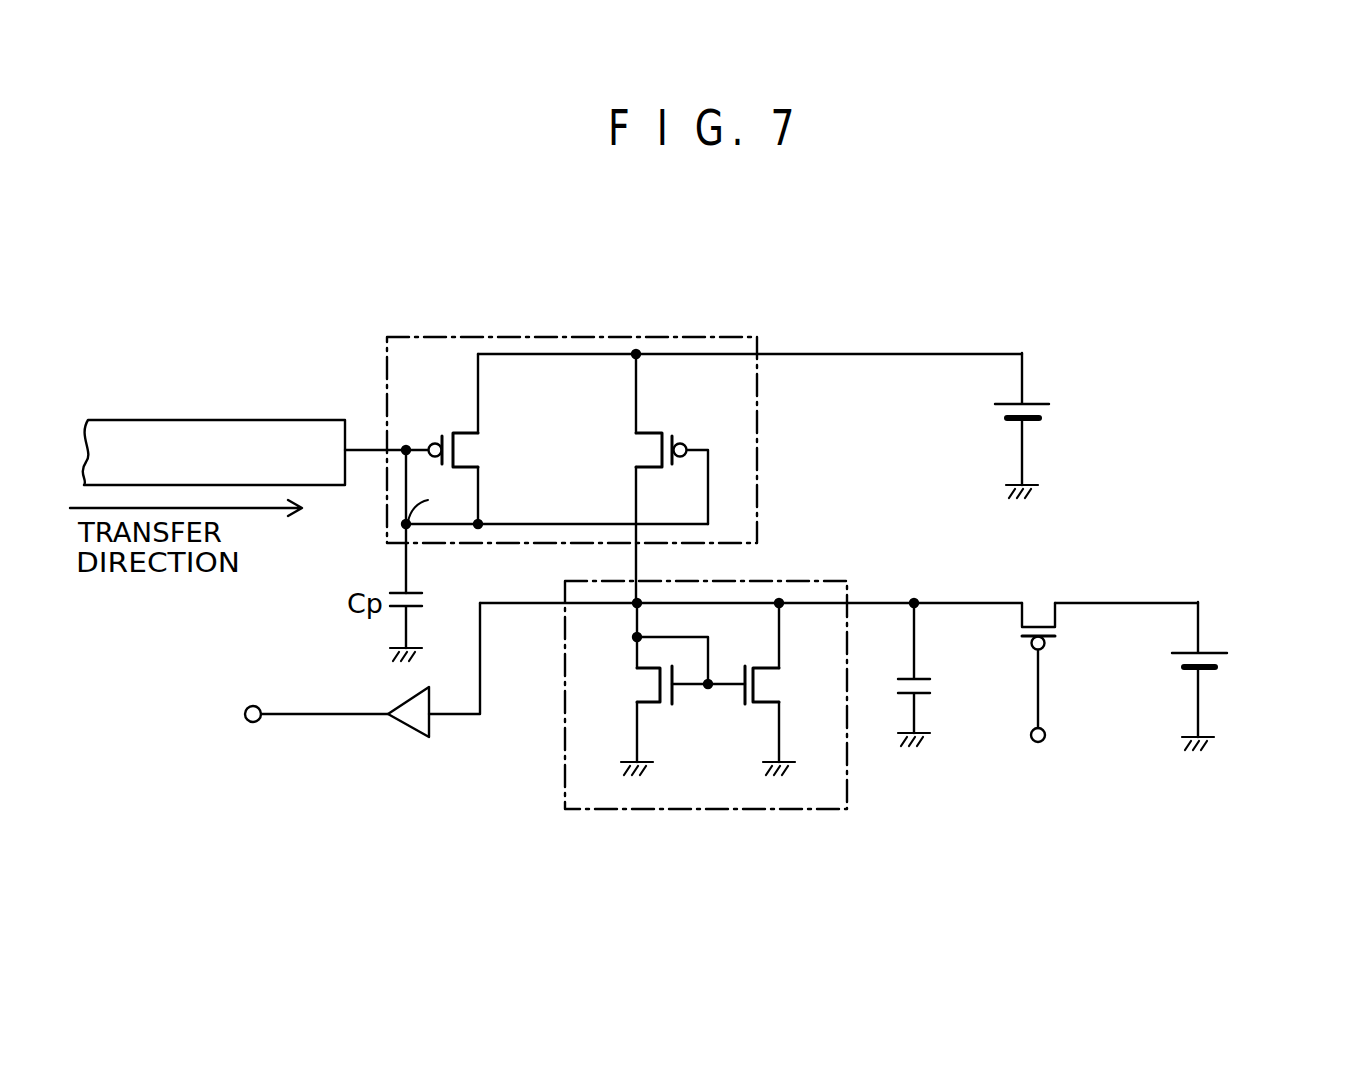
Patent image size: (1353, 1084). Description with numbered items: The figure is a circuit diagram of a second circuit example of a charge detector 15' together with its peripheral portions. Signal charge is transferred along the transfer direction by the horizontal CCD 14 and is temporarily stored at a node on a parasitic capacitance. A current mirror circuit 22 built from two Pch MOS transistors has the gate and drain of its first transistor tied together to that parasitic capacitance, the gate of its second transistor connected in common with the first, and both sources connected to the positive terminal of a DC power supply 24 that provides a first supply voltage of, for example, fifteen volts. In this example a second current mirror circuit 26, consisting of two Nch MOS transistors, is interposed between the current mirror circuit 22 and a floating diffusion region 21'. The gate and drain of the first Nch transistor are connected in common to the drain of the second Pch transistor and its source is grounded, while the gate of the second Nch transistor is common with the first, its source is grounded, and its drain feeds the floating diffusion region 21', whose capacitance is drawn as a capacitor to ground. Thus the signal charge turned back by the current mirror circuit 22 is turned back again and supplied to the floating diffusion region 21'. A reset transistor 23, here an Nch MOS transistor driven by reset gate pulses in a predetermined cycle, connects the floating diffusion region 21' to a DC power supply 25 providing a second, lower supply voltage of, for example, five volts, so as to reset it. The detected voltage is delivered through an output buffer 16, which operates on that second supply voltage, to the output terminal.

The horizontal CCD 14 is at (178, 420).
The charge detector 15' is at (838, 410).
The output buffer 16 is at (403, 722).
The floating diffusion region 21' is at (922, 736).
The current mirror circuit 22 is at (415, 337).
The reset transistor 23 is at (1040, 608).
The DC power supply 24 is at (995, 410).
The DC power supply 25 is at (1172, 660).
The second current mirror circuit 26 is at (634, 810).